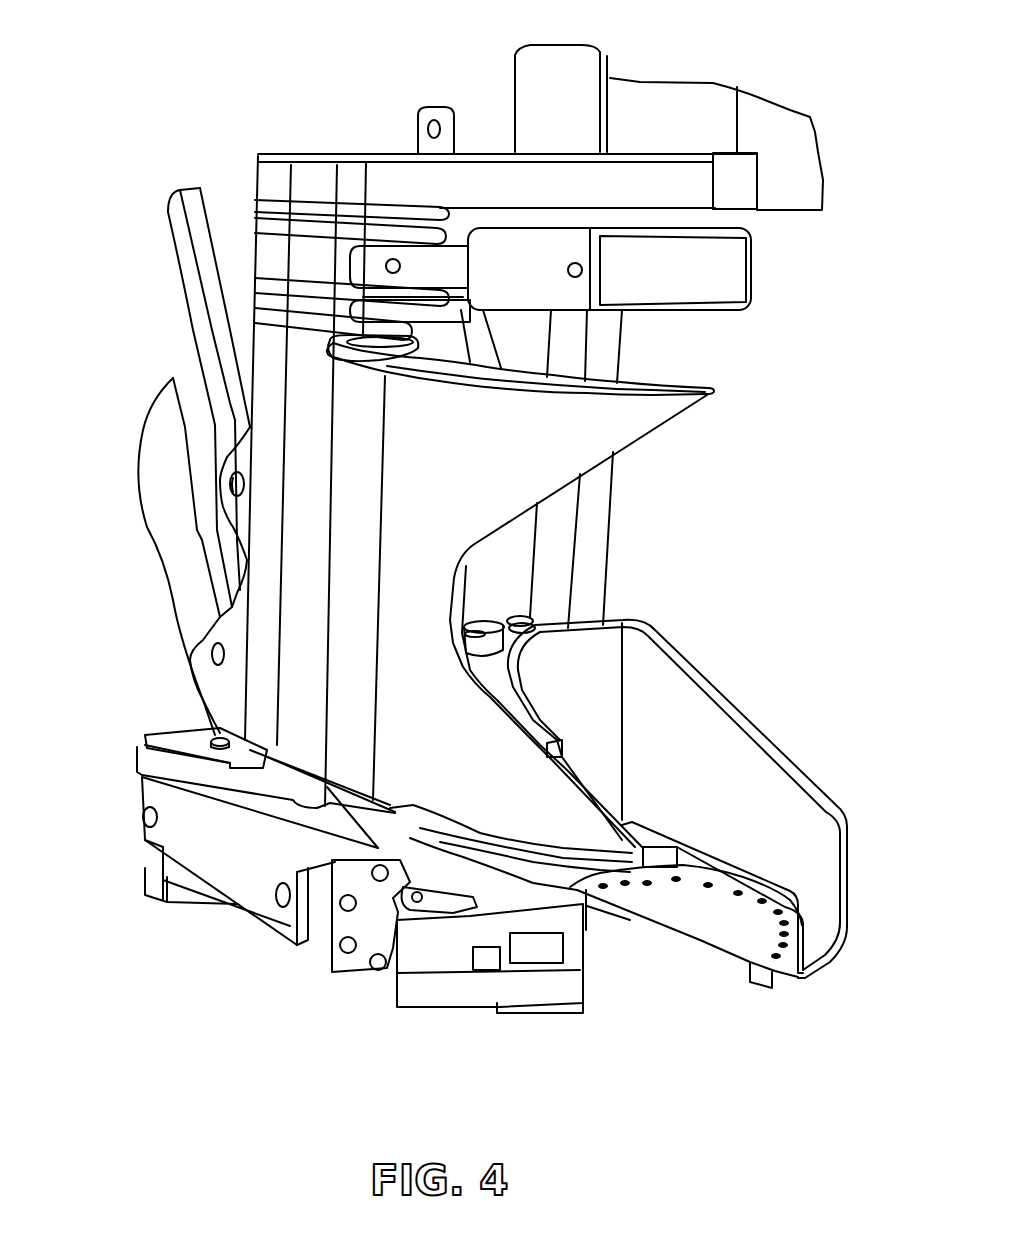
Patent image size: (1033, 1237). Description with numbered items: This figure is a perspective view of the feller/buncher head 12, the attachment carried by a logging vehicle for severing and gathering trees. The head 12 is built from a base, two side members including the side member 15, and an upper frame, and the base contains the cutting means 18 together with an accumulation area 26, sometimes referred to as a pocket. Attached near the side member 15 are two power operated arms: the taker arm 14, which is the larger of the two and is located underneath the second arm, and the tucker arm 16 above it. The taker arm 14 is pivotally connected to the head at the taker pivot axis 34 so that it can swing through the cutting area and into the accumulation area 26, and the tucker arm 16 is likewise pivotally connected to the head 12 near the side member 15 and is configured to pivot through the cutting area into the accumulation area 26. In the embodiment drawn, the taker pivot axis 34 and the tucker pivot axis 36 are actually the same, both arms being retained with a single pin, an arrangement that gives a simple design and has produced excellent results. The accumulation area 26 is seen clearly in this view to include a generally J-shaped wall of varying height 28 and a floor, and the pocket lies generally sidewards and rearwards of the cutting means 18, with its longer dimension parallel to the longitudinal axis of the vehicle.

The feller/buncher head 12 is at (158, 633).
The taker arm 14 is at (530, 433).
The side member 15 is at (257, 532).
The tucker arm 16 is at (703, 270).
The cutting means 18 is at (686, 950).
The accumulation area 26 is at (583, 713).
The J-shaped wall of varying height 28 is at (750, 707).
The taker pivot axis 34 is at (365, 358).
The tucker pivot axis 36 is at (368, 213).